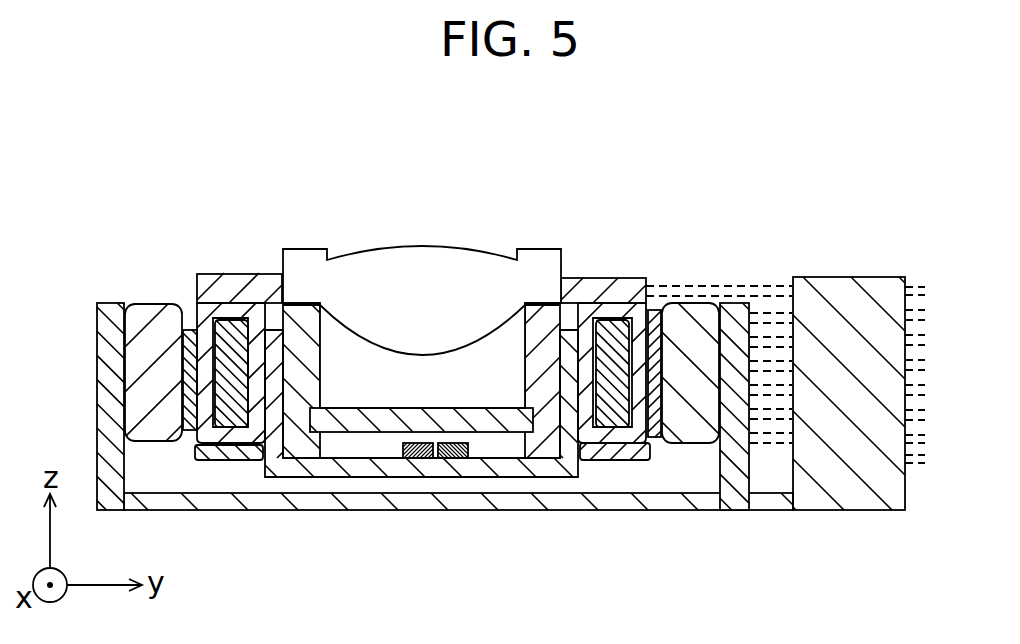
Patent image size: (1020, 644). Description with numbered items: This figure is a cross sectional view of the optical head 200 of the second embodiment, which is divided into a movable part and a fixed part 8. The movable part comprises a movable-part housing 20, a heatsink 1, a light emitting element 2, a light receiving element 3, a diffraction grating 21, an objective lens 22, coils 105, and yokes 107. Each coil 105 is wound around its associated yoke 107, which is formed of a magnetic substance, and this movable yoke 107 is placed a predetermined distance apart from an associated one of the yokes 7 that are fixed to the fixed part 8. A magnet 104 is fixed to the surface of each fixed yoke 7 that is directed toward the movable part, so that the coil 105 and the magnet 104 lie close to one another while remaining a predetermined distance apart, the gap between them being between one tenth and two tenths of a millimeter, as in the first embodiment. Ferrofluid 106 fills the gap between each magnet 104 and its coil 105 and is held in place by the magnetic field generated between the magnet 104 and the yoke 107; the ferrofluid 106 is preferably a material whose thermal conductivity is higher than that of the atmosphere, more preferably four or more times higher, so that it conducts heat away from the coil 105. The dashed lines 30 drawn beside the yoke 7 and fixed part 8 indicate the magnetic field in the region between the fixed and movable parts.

The optical head 200 is at (305, 213).
The heatsink 1 is at (208, 453).
The light emitting element 2 is at (412, 457).
The light receiving element 3 is at (455, 457).
The yoke 7 is at (105, 503).
The fixed part 8 is at (847, 287).
The movable-part housing 20 is at (587, 284).
The diffraction grating 21 is at (497, 423).
The objective lens 22 is at (430, 267).
The magnetic flux 30 is at (725, 285).
The magnet 104 is at (162, 428).
The coil 105 is at (232, 322).
The ferrofluid 106 is at (190, 351).
The yoke 107 is at (233, 417).